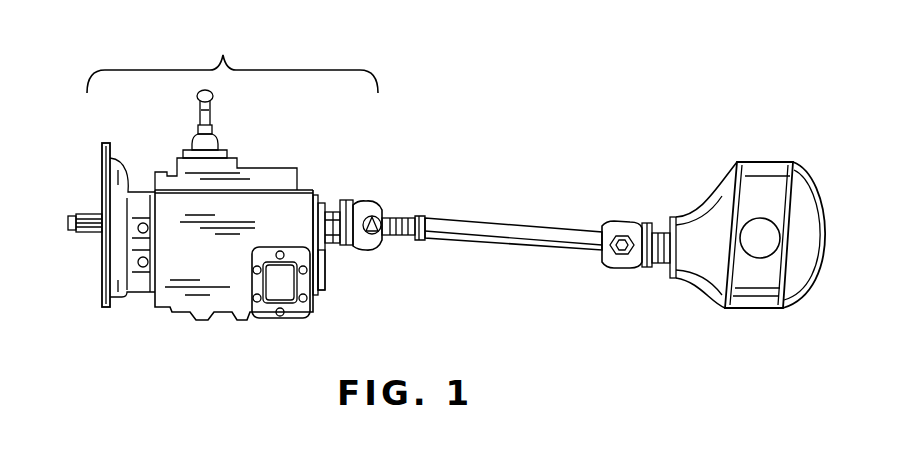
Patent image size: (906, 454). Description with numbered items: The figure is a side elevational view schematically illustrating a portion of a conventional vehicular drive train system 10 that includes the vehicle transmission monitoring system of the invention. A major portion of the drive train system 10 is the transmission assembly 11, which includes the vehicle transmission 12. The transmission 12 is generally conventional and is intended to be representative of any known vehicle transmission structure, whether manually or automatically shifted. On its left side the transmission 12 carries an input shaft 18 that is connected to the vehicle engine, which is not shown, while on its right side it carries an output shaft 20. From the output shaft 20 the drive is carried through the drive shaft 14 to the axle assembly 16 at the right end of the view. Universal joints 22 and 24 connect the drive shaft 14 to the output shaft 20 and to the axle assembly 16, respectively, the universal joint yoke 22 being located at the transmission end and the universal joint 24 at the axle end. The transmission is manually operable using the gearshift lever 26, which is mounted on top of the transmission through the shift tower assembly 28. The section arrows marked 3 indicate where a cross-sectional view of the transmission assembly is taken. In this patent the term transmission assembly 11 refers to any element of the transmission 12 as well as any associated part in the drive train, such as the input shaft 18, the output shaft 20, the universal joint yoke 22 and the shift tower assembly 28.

The vehicular drive train system 10 is at (543, 100).
The transmission assembly 11 is at (232, 60).
The vehicle transmission 12 is at (182, 320).
The drive shaft 14 is at (503, 246).
The axle assembly 16 is at (750, 310).
The input shaft 18 is at (70, 213).
The output shaft 20 is at (328, 212).
The universal joint 22 is at (368, 200).
The universal joint 24 is at (616, 270).
The gearshift lever 26 is at (212, 111).
The shift tower assembly 28 is at (220, 146).
The section line 3- 3 is at (27, 221).